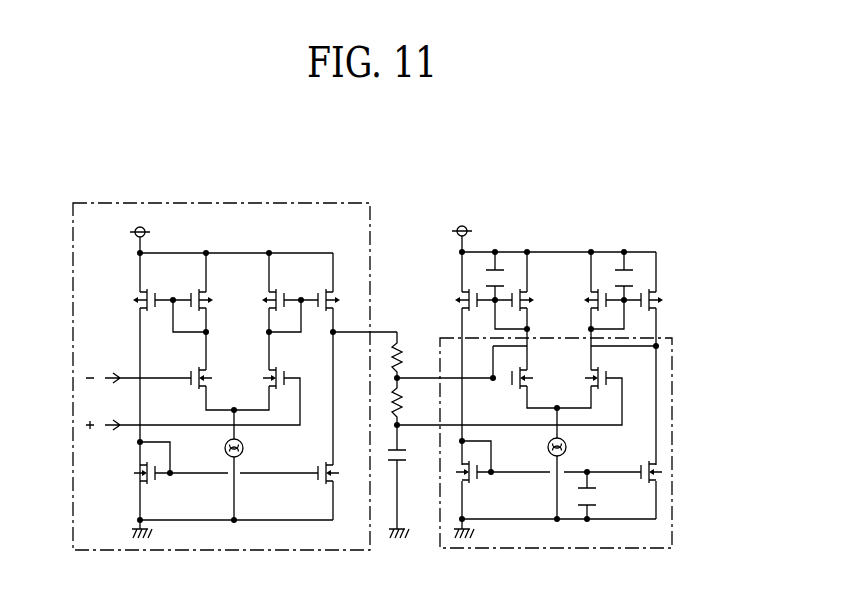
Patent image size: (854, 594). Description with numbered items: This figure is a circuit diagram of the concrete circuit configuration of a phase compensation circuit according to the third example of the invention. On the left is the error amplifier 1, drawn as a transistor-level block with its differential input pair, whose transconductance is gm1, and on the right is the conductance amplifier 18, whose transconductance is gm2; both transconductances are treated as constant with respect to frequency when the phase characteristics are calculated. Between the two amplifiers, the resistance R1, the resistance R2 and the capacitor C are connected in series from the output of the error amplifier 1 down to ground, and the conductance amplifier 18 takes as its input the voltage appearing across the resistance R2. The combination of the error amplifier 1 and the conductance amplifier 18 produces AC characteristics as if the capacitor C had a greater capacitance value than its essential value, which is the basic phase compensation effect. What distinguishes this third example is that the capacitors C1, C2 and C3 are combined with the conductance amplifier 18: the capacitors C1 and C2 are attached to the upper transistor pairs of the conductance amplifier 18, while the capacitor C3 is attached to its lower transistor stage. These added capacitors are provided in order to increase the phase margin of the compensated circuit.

The error amplifier 1 is at (235, 333).
The conductance amplifier 18 is at (602, 443).
The transconductance of the error amplifier gm1 is at (237, 372).
The transconductance of the conductance amplifier gm2 is at (559, 372).
The resistance R1 is at (411, 355).
The resistance R2 is at (411, 401).
The capacitor C is at (404, 481).
The capacitor C1 is at (505, 268).
The capacitor C2 is at (624, 268).
The capacitor C3 is at (598, 486).